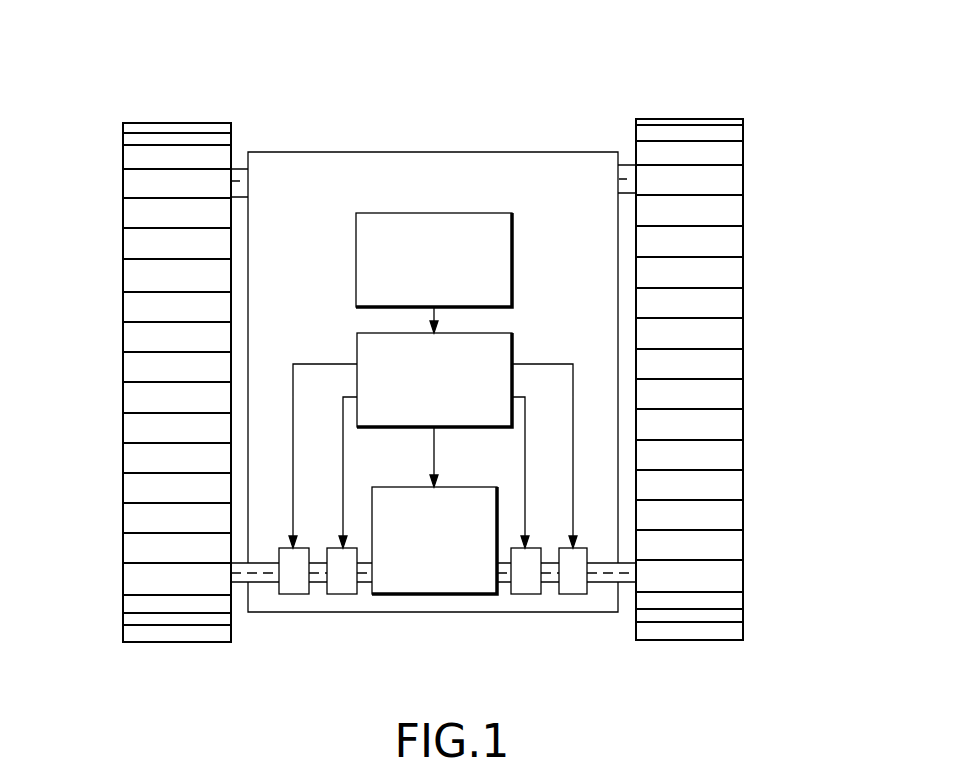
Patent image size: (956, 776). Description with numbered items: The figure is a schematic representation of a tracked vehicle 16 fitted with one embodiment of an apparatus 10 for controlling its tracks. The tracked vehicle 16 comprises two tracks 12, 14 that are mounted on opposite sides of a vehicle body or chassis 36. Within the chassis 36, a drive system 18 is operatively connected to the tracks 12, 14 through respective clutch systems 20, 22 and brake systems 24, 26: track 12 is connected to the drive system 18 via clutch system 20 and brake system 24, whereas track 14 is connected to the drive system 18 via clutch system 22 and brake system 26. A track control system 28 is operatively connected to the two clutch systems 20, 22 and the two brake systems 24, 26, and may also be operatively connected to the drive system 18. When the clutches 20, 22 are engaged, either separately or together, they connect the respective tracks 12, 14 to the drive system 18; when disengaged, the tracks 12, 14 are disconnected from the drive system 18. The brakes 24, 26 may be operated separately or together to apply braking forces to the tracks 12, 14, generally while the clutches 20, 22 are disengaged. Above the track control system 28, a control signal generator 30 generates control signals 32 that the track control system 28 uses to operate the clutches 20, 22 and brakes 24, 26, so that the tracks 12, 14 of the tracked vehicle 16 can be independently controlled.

The apparatus 10 is at (152, 76).
The track 12 is at (123, 180).
The track 14 is at (743, 188).
The tracked vehicle 16 is at (525, 150).
The vehicle body or chassis 36 is at (375, 152).
The control signal generator 30 is at (512, 243).
The control signals 32 is at (432, 316).
The track control system 28 is at (512, 347).
The drive system 18 is at (395, 487).
The clutch system 20 is at (341, 594).
The brake system 24 is at (289, 594).
The clutch system 22 is at (523, 594).
The brake system 26 is at (573, 594).